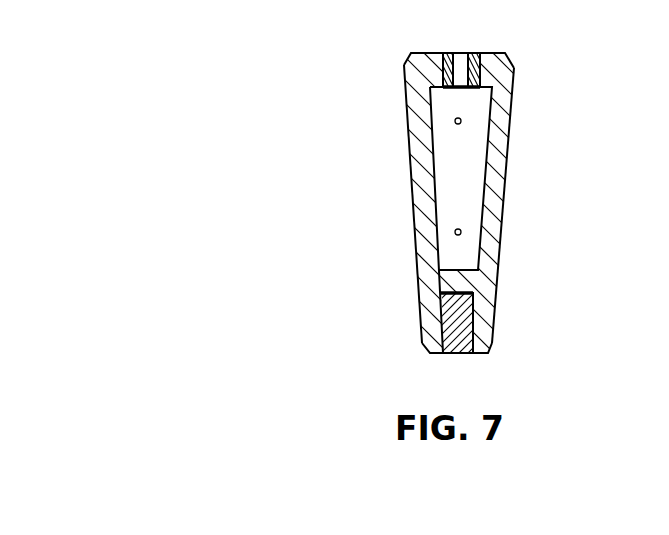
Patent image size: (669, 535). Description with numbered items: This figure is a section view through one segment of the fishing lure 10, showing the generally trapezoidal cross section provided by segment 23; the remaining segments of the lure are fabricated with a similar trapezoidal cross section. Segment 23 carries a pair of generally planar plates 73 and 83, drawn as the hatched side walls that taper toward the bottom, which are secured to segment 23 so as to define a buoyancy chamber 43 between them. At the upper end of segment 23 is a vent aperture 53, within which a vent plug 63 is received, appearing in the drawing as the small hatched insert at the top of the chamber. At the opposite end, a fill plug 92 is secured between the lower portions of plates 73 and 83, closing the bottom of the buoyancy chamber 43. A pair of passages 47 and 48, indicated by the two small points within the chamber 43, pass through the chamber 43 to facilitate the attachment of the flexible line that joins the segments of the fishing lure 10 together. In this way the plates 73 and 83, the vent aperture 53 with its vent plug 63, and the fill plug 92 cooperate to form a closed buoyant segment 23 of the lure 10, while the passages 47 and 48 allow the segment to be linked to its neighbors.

The fishing lure 10 is at (440, 240).
The segment 23 is at (467, 240).
The buoyancy chamber 43 is at (478, 147).
The passage 47 is at (455, 121).
The passage 48 is at (455, 232).
The vent aperture 53 is at (438, 66).
The vent plug 63 is at (470, 53).
The plate 73 is at (408, 192).
The plate 83 is at (503, 210).
The fill plug 92 is at (462, 353).